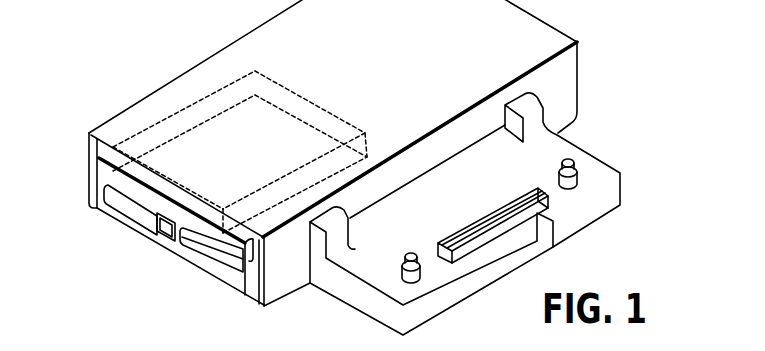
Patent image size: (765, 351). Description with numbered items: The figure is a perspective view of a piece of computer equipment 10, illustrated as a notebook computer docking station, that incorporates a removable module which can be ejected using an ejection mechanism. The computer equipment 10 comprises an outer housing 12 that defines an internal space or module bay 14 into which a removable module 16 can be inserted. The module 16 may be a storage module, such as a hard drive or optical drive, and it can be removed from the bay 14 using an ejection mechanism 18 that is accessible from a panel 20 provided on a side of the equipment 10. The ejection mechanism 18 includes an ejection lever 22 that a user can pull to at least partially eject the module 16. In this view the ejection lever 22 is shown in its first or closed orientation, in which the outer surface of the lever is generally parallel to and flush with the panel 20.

The computer equipment 10 is at (91, 47).
The outer housing 12 is at (259, 38).
The module bay 14 is at (320, 106).
The removable module 16 is at (92, 171).
The ejection mechanism 18 is at (101, 222).
The panel 20 is at (186, 254).
The ejection lever 22 is at (130, 228).